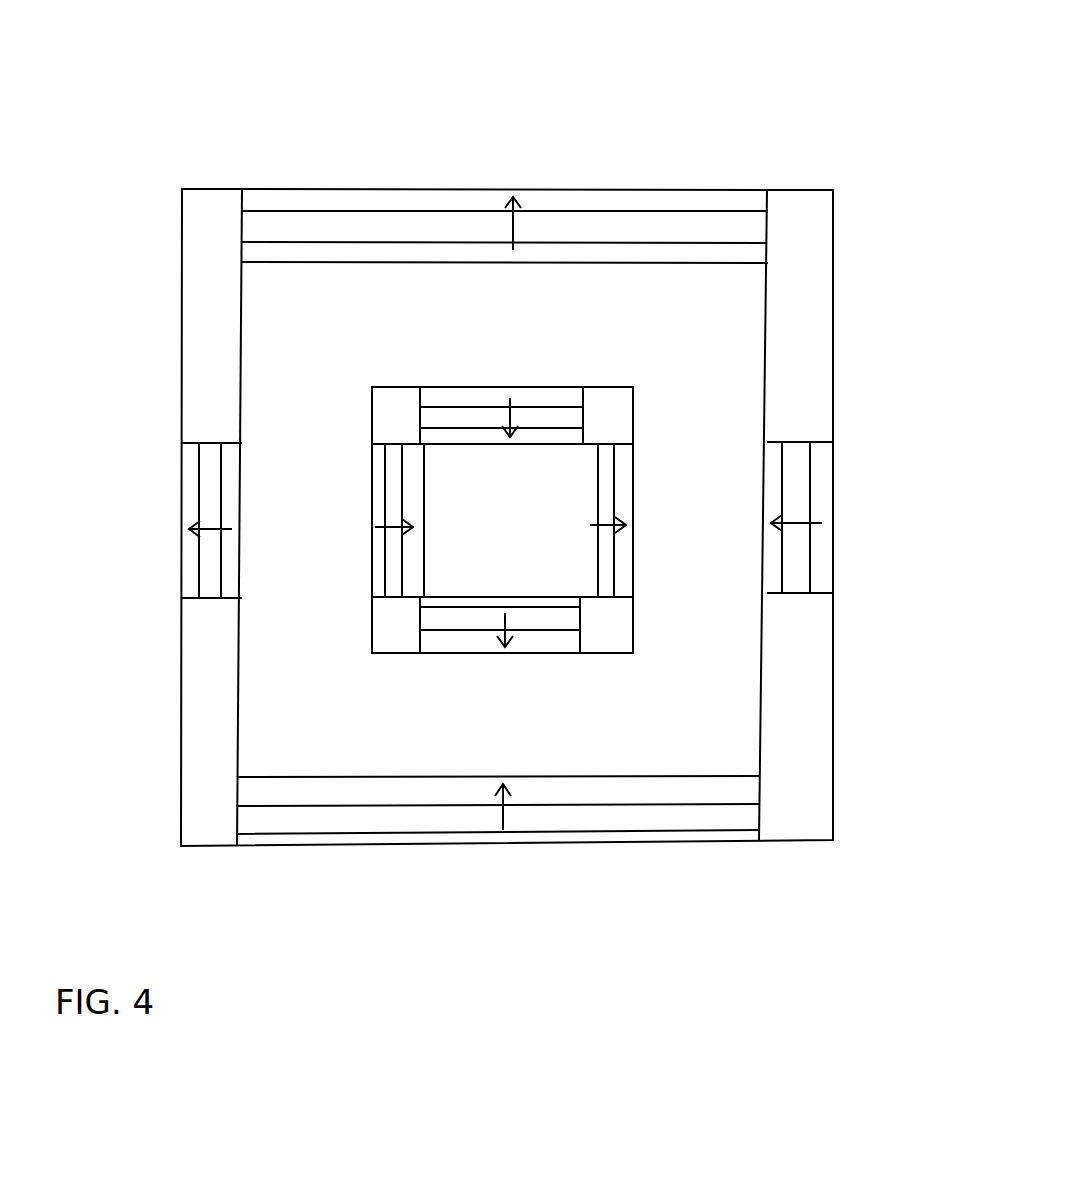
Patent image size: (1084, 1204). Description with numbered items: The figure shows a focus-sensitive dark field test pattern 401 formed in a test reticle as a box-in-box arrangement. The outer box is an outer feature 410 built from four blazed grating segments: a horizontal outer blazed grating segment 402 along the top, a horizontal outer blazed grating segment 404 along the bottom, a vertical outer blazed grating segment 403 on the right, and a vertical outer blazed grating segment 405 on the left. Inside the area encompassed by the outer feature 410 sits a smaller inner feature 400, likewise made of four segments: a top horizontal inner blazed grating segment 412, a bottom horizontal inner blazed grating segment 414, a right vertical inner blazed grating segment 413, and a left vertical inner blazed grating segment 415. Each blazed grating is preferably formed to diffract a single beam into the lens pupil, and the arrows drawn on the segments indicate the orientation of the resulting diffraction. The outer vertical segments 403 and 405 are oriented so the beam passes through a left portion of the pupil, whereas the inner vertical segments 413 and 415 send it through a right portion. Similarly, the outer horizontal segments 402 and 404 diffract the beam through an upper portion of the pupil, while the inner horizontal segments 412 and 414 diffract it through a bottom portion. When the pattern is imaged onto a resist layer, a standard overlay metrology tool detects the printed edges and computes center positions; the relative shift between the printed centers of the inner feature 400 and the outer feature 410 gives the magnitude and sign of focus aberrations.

The focus sensitive dark field test pattern 401 is at (304, 66).
The inner feature 400 is at (602, 405).
The horizontal outer blazed grating segment 402 is at (360, 225).
The vertical outer blazed grating segment 403 is at (795, 478).
The horizontal outer blazed grating segment 404 is at (617, 818).
The vertical outer blazed grating segment 405 is at (195, 473).
The outer feature 410 is at (808, 770).
The top horizontal inner blazed grating segment 412 is at (452, 396).
The right vertical inner blazed grating segment 413 is at (622, 562).
The bottom horizontal inner blazed grating segment 414 is at (447, 640).
The left vertical inner blazed grating segment 415 is at (378, 475).